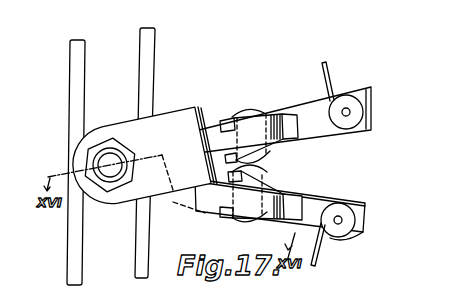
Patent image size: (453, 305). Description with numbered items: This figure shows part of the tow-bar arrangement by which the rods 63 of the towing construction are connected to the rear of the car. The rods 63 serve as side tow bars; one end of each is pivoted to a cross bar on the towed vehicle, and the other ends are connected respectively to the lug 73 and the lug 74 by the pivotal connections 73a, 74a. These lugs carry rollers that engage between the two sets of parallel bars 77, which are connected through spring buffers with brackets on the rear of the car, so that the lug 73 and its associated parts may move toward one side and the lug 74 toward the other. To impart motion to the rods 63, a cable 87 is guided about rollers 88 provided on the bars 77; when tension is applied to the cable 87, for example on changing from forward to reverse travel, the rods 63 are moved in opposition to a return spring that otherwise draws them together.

The parallel bars 77 is at (77, 51).
The lug 73 is at (178, 128).
The pivotal connection 73a is at (245, 105).
The rods 63 is at (312, 135).
The lug 74 is at (273, 219).
The pivotal connection 74a is at (270, 220).
The cable 87 is at (321, 64).
The rollers 88 is at (344, 100).